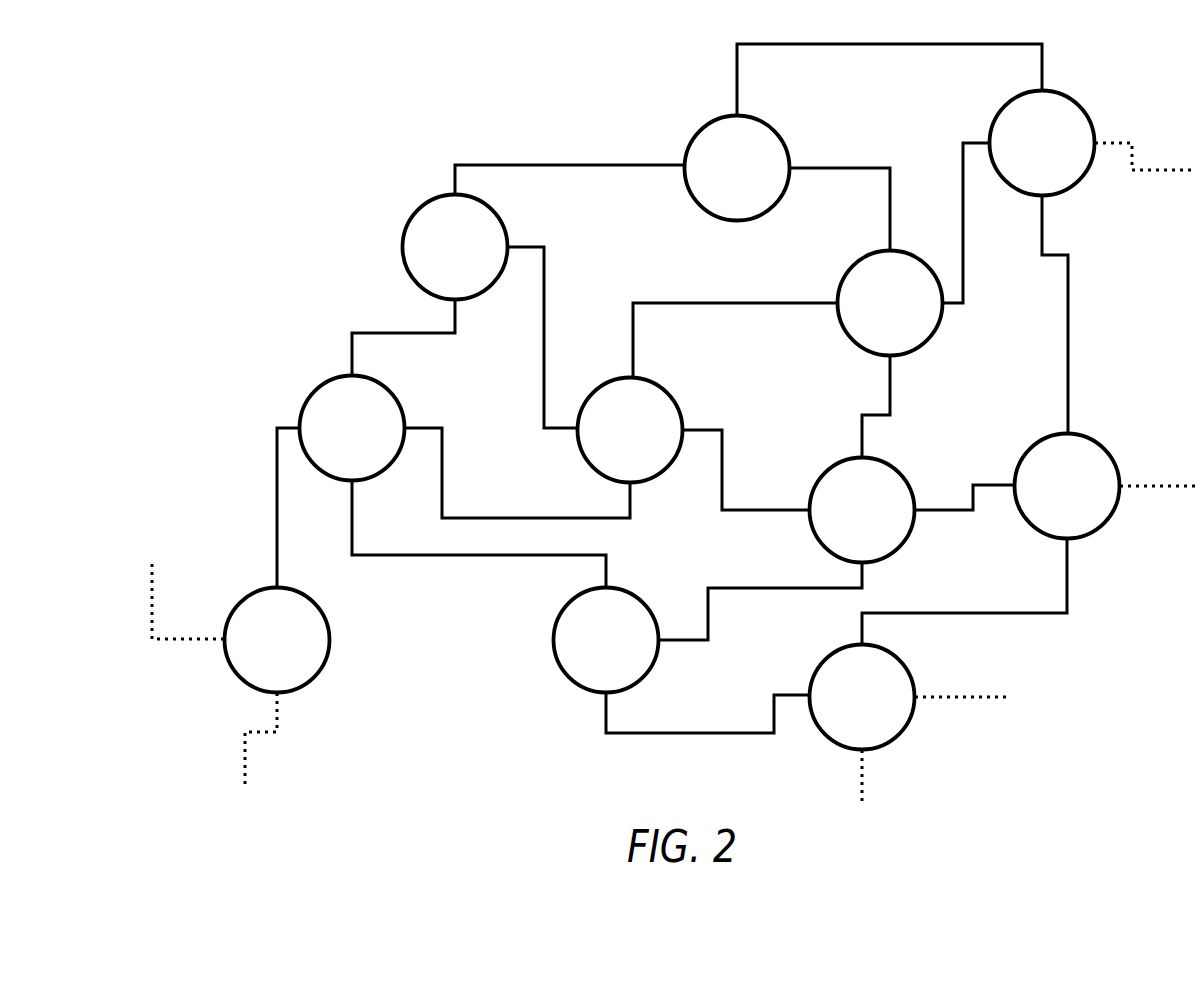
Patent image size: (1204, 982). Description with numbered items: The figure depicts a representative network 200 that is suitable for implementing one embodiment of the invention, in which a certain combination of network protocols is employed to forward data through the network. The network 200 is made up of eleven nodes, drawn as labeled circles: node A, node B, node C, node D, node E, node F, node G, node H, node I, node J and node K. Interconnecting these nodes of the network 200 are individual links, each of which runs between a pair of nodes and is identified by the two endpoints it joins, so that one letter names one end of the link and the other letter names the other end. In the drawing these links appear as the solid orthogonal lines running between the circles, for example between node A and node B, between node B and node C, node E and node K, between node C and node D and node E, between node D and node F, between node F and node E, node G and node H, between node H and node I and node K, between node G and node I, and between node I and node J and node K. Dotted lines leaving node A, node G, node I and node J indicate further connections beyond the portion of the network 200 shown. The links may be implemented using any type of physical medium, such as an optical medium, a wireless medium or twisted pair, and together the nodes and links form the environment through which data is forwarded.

The network 200 is at (320, 145).
The node A is at (277, 640).
The node B is at (352, 428).
The node C is at (455, 247).
The node D is at (737, 168).
The node E is at (630, 430).
The node F is at (890, 303).
The node G is at (1042, 143).
The node H is at (862, 510).
The node I is at (1067, 486).
The node J is at (862, 697).
The node K is at (606, 640).